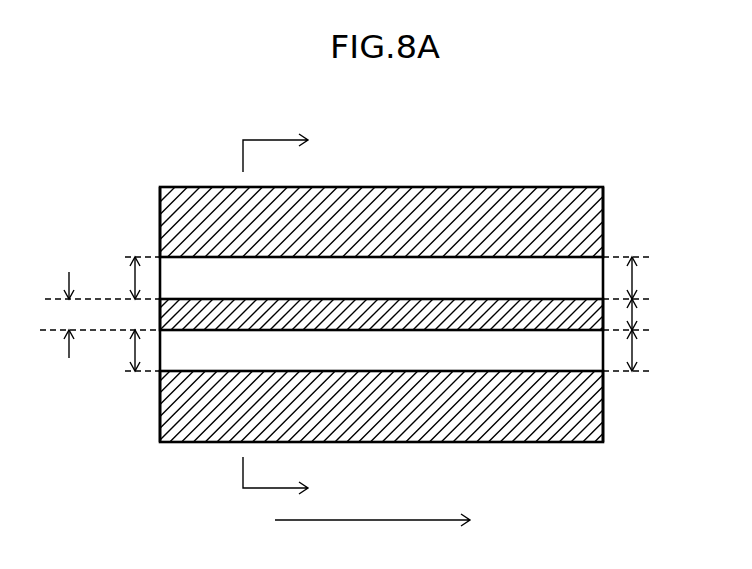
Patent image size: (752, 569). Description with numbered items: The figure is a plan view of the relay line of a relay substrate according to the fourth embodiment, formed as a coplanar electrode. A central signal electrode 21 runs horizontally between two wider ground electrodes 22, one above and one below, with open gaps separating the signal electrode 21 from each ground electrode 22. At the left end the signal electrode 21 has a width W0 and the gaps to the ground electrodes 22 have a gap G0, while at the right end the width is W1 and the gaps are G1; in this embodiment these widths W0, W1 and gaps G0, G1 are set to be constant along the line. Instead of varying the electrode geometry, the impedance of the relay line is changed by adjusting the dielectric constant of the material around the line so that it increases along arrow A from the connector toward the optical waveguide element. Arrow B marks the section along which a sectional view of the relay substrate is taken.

The signal electrode 21 is at (553, 313).
The ground electrodes 22 is at (505, 225).
The gap between the signal electrode and the ground electrodes G0 is at (127, 314).
The width of the signal electrode W0 is at (100, 315).
The gap between the signal electrode and the ground electrodes G1 is at (636, 314).
The width of the signal electrode W1 is at (649, 314).
The arrow A is at (386, 521).
The arrow B is at (287, 315).